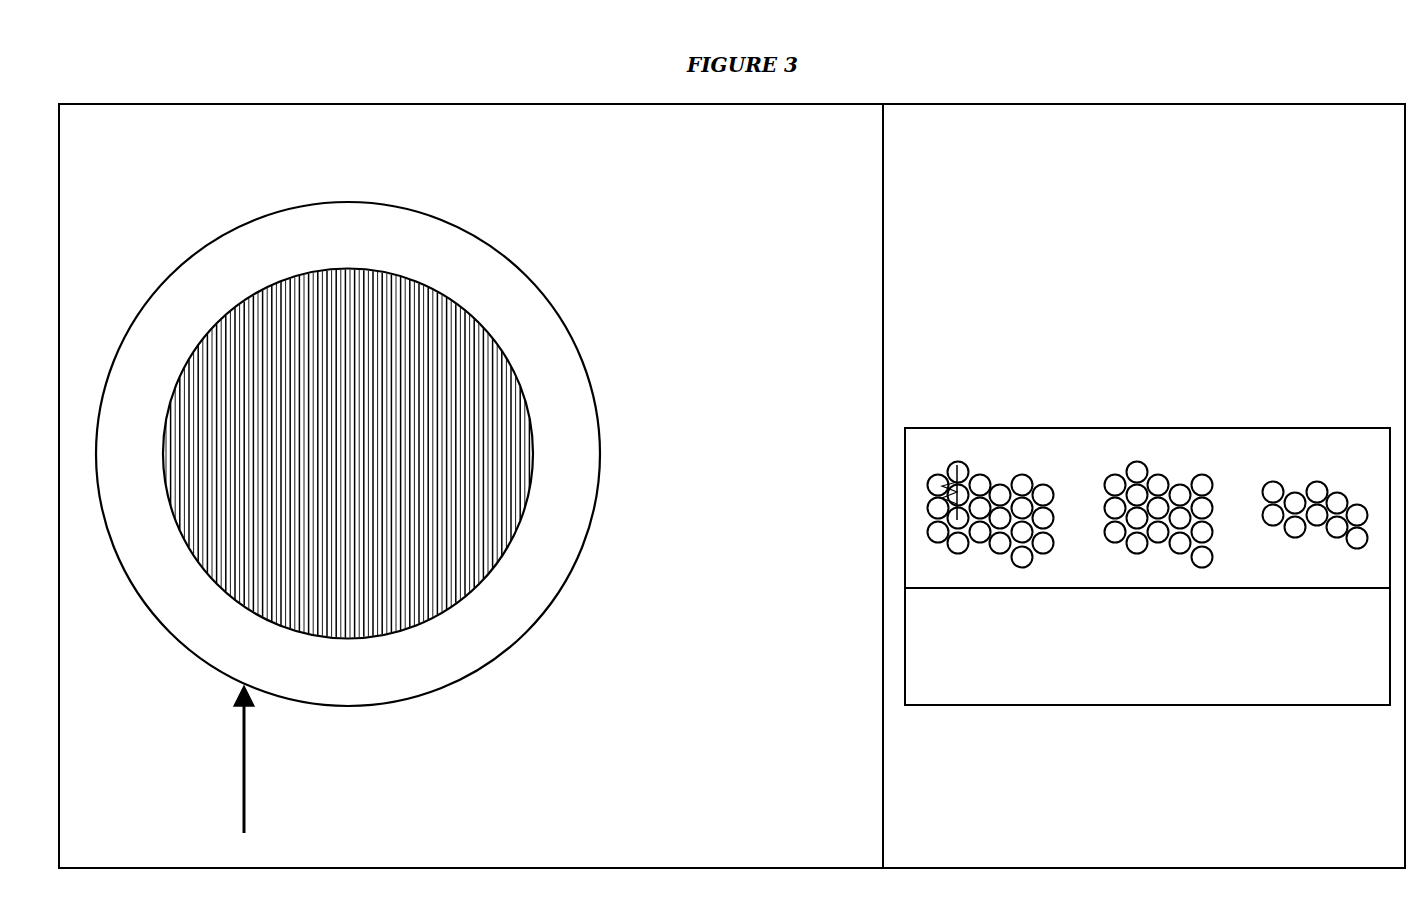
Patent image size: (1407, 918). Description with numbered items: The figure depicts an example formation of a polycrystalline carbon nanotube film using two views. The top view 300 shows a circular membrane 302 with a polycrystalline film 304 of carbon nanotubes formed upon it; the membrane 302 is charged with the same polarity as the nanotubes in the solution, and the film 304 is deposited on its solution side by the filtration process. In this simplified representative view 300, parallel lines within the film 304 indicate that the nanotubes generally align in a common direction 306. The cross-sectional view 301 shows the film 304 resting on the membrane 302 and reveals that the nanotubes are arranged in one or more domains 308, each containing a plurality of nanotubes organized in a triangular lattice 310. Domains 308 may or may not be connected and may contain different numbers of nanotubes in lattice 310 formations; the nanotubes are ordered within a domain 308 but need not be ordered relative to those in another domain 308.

The top view 300 is at (743, 495).
The cross-sectional view 301 is at (1148, 363).
The membrane 302 is at (567, 488).
The polycrystalline film 304 is at (1277, 362).
The direction 306 is at (183, 759).
The domains 308 is at (1013, 482).
The triangular lattice 310 is at (957, 470).